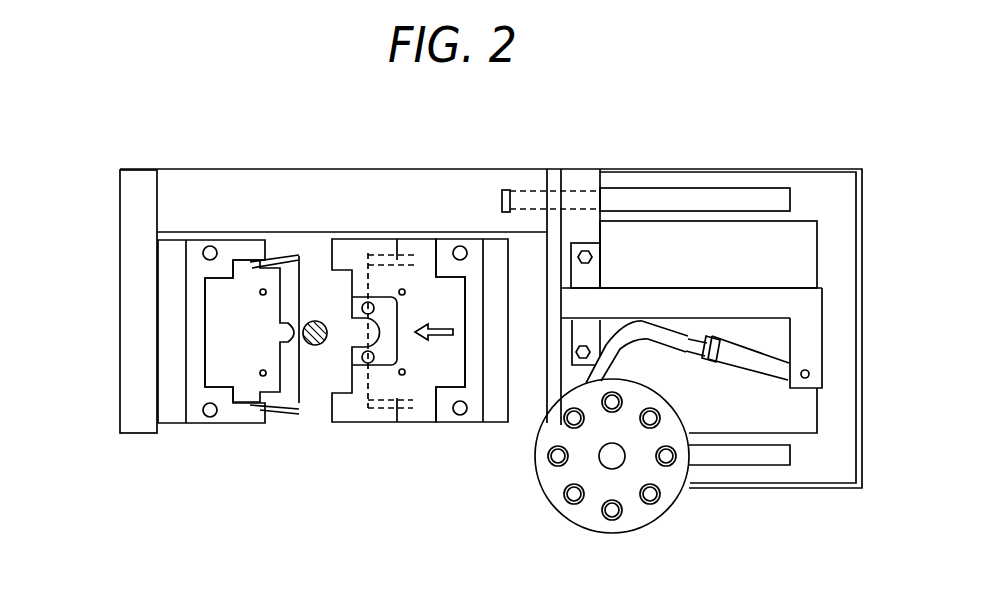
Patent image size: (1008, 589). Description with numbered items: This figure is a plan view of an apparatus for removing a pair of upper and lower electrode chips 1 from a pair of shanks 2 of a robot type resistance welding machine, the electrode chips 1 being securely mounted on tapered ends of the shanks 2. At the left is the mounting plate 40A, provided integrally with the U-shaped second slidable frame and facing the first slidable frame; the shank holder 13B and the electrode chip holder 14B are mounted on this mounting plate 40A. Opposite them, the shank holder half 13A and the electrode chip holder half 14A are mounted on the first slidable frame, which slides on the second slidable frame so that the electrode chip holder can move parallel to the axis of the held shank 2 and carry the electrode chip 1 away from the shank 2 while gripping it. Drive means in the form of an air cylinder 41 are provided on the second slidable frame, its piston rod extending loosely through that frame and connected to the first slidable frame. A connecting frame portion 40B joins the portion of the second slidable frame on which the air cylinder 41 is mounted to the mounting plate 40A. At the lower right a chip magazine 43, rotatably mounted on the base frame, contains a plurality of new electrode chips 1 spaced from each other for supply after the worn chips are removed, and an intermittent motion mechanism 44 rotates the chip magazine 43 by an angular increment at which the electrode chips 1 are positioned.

The electrode chip 1 is at (556, 456).
The shank 2 is at (314, 350).
The shank holder half 13A is at (421, 282).
The shank holder 13B is at (243, 272).
The electrode chip holder half 14A is at (366, 264).
The electrode chip holder 14B is at (305, 268).
The mounting plate 40A is at (140, 187).
The connecting frame portion 40B is at (467, 197).
The air cylinder 41 is at (727, 237).
The chip magazine 43 is at (554, 510).
The intermittent motion mechanism 44 is at (760, 378).